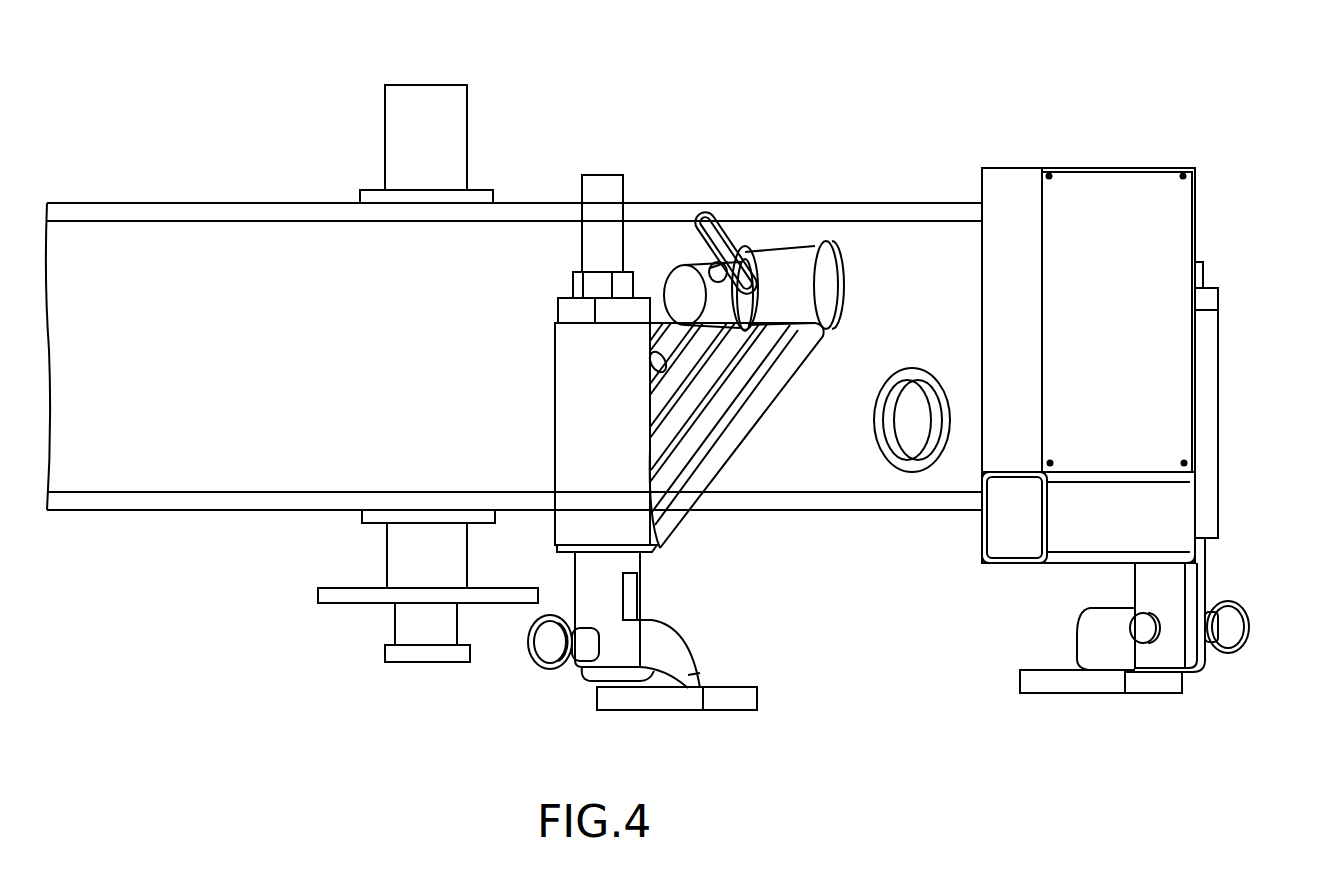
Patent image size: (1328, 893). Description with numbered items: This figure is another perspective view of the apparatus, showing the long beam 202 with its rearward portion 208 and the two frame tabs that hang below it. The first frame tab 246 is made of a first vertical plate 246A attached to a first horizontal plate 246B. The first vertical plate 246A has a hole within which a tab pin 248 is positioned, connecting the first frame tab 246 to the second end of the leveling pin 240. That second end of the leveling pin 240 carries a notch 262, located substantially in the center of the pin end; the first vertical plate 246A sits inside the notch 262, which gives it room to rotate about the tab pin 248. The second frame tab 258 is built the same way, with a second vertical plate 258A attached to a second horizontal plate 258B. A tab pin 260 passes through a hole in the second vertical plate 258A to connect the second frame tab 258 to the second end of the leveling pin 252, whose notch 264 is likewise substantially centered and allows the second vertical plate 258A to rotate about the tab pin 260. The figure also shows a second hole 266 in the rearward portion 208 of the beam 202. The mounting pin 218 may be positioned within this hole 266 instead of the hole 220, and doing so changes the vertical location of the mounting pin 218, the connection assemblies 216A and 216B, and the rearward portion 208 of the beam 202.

The beam 202 is at (513, 203).
The rearward portion 208 is at (1123, 143).
The connection assembly 216A is at (520, 392).
The connection assembly 216B is at (1244, 457).
The mounting pin 218 is at (684, 283).
The hole 220 is at (818, 250).
The leveling pin 240 is at (597, 176).
The first frame tab 246 is at (673, 680).
The first vertical plate 246A is at (700, 645).
The first horizontal plate 246B is at (757, 697).
The tab pin 248 is at (566, 670).
The leveling pin 252 is at (1200, 262).
The second frame tab 258 is at (1056, 688).
The second vertical plate 258A is at (1080, 625).
The second horizontal plate 258B is at (1020, 682).
The tab pin 260 is at (1243, 625).
The notch 262 is at (630, 598).
The notch 264 is at (1190, 580).
The second hole 266 is at (906, 378).